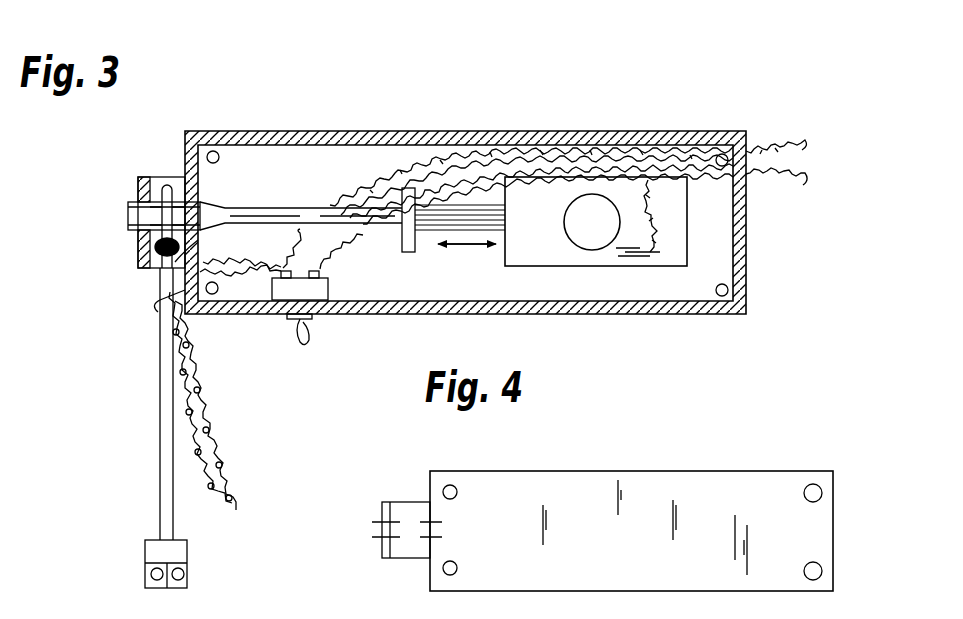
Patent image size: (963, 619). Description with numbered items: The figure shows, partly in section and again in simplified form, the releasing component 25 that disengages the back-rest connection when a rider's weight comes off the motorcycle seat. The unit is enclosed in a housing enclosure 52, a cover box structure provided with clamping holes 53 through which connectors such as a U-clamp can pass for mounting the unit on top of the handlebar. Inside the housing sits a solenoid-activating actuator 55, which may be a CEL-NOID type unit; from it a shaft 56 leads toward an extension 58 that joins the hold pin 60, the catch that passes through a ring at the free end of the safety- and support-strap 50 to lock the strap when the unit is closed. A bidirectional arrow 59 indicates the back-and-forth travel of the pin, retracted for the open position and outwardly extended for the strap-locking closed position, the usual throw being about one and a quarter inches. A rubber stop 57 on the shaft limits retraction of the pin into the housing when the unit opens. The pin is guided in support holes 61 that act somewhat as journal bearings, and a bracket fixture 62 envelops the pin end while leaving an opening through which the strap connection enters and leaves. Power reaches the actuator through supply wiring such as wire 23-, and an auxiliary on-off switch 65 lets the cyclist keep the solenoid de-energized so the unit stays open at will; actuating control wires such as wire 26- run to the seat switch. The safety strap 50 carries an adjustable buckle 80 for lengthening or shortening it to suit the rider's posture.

In FIG. 3, the power supply electrical wiring 23- is at (478, 165).
In FIG. 3, the releasing component 25 is at (613, 88).
In FIG. 4, the releasing component 25 is at (548, 462).
In FIG. 3, the actuating control wire 26- is at (166, 320).
In FIG. 3, the safety- and support-strap 50 is at (160, 478).
In FIG. 3, the housing enclosure 52 is at (607, 131).
In FIG. 4, the housing enclosure 52 is at (684, 471).
In FIG. 3, the clamping holes 53 is at (213, 151).
In FIG. 4, the clamping holes 53 is at (458, 492).
In FIG. 3, the solenoid-activating actuator 55 is at (588, 266).
In FIG. 3, the shaft 56 is at (425, 245).
In FIG. 3, the rubber stop 57 is at (404, 262).
In FIG. 3, the shaft extension 58 is at (276, 208).
In FIG. 3, the bidirectional arrow 59 is at (468, 249).
In FIG. 3, the hold pin 60 is at (128, 212).
In FIG. 3, the support holes 61 is at (140, 190).
In FIG. 4, the support holes 61 is at (440, 540).
In FIG. 3, the bracket fixture 62 is at (150, 177).
In FIG. 4, the bracket fixture 62 is at (382, 548).
In FIG. 3, the auxiliary on-off switch 65 is at (317, 322).
In FIG. 3, the adjustable buckle 80 is at (145, 558).